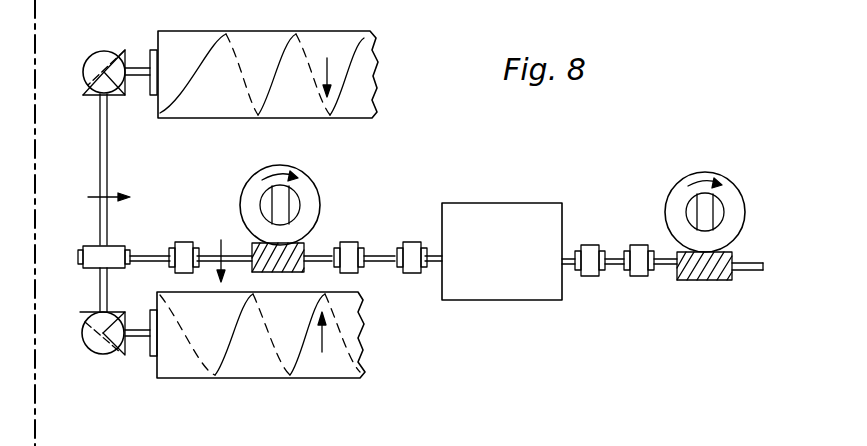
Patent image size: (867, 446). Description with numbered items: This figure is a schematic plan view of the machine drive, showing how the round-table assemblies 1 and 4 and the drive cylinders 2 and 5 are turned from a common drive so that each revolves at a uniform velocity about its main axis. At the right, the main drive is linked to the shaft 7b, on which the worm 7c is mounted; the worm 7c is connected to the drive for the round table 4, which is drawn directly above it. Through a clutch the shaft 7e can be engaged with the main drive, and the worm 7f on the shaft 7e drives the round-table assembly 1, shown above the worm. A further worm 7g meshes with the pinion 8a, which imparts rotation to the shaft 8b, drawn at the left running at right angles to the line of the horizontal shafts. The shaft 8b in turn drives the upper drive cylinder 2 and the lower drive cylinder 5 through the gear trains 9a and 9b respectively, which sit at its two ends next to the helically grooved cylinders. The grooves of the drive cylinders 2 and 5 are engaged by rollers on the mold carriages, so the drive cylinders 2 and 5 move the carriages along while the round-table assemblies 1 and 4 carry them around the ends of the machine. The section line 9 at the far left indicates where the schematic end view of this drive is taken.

The round-table assembly 1 is at (318, 168).
The drive cylinder 2 is at (186, 118).
The round-table assembly 4 is at (748, 186).
The drive cylinder 5 is at (186, 378).
The shaft 7b is at (612, 256).
The worm 7c is at (706, 280).
The shaft 7e is at (380, 263).
The worm 7f is at (308, 246).
The worm 7g is at (88, 246).
The pinion 8a is at (124, 254).
The shaft 8b is at (108, 152).
The section line 9 is at (22, 18).
The gear train 9a is at (112, 32).
The gear train 9b is at (96, 378).